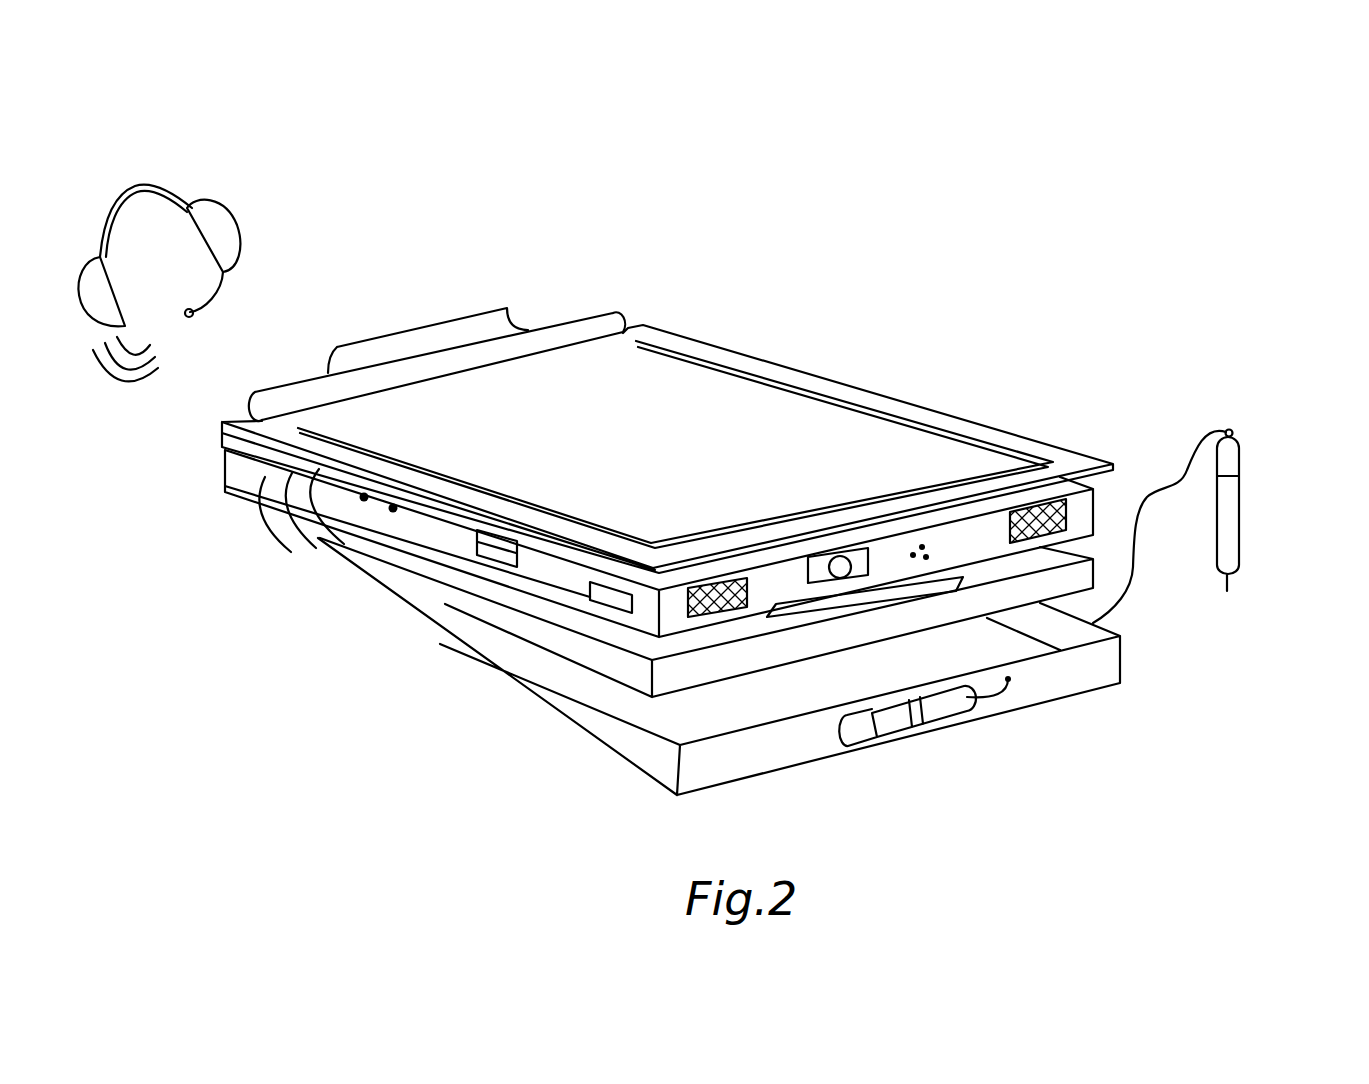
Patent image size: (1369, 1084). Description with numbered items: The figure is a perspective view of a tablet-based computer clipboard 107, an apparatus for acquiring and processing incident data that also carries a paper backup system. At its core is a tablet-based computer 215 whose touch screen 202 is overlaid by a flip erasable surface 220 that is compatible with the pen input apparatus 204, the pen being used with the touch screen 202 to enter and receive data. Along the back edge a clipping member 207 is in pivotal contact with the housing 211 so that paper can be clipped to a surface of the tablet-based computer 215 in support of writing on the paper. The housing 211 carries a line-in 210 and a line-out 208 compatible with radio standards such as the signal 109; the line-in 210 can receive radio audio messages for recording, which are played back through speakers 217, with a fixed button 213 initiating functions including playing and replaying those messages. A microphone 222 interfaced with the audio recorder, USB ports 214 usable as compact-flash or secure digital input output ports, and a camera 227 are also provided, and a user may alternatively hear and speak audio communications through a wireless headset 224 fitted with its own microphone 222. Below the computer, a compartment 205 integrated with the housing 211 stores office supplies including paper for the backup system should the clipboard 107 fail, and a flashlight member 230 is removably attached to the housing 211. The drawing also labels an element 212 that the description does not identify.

The tablet-based computer clipboard 107 is at (1048, 272).
The signal 109 is at (137, 382).
The touch screen 202 is at (893, 522).
The pen input apparatus 204 is at (1240, 490).
The compartment 205 is at (1120, 637).
The clipping member 207 is at (337, 348).
The line-out 208 is at (364, 497).
The line-in 210 is at (393, 508).
The housing 211 is at (1097, 510).
The cradle tray 212 is at (653, 647).
The fixed button 213 is at (592, 588).
The USB ports 214 is at (477, 536).
The tablet-based computer 215 is at (570, 583).
The speakers 217 is at (690, 588).
The flip erasable surface 220 is at (863, 433).
The microphone 222 is at (192, 316).
The wireless headset 224 is at (147, 186).
The camera 227 is at (860, 570).
The flashlight member 230 is at (943, 706).